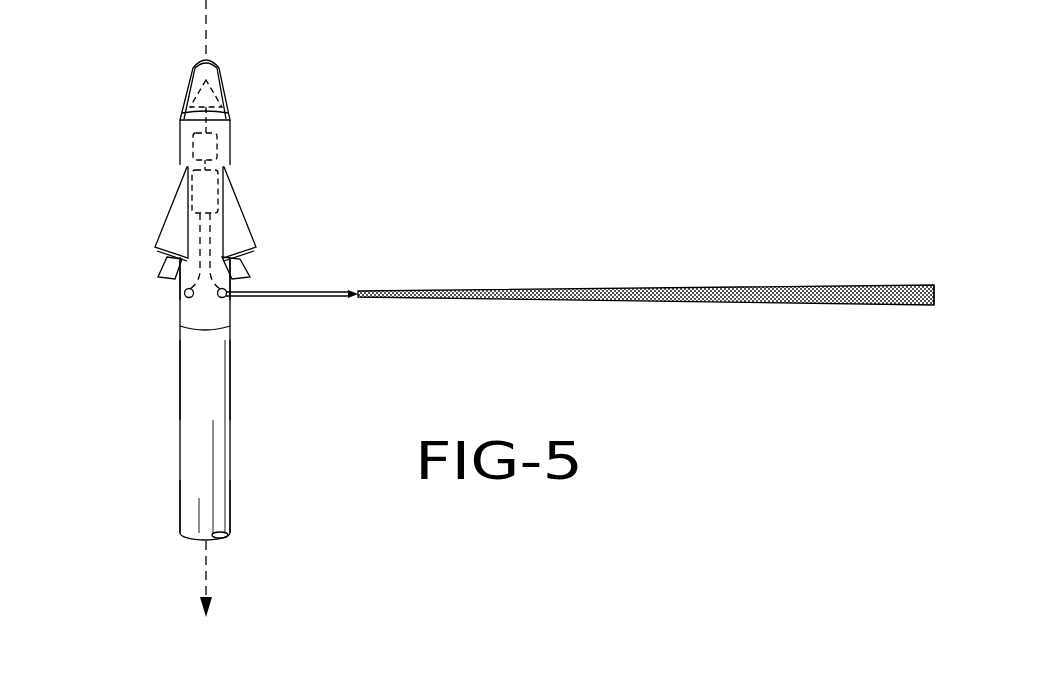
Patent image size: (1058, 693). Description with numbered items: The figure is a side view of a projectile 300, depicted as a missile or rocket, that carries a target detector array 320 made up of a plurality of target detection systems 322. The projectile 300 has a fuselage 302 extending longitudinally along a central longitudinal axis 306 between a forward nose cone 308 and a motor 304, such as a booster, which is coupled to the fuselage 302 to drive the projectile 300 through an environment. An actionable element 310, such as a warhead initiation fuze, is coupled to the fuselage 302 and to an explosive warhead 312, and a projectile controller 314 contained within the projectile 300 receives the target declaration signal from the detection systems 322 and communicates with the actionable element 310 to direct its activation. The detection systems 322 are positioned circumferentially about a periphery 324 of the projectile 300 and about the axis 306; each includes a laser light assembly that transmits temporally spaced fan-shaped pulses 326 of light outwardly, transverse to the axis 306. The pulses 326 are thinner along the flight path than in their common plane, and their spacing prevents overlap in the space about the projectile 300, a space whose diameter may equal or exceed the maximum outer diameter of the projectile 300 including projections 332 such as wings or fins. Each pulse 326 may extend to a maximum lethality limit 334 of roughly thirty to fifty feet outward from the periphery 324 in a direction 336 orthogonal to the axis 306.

The projectile 300 is at (236, 409).
The fuselage 302 is at (193, 467).
The motor 304 is at (170, 509).
The central longitudinal axis 306 is at (207, 580).
The forward nose cone 308 is at (190, 80).
The actionable element 310 is at (217, 148).
The explosive warhead 312 is at (215, 92).
The projectile controller 314 is at (190, 186).
The target detector array 320 is at (165, 294).
The target detection system 322 is at (186, 298).
The periphery 324 is at (172, 409).
The fan-shaped pulses 326 is at (640, 297).
The projections 332 is at (232, 222).
The maximum lethality limit 334 is at (921, 283).
The direction 336 is at (308, 293).